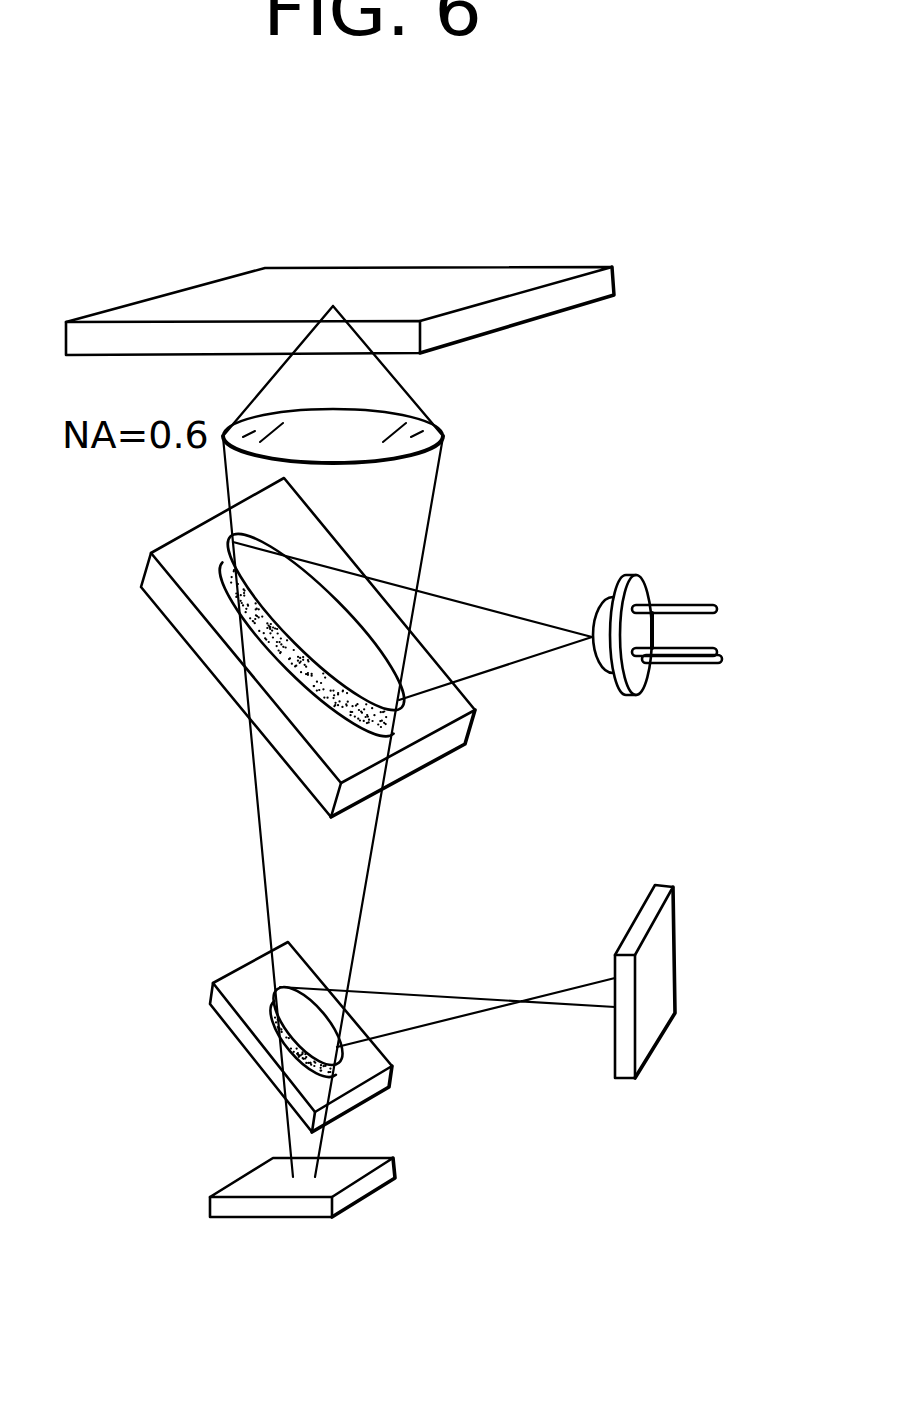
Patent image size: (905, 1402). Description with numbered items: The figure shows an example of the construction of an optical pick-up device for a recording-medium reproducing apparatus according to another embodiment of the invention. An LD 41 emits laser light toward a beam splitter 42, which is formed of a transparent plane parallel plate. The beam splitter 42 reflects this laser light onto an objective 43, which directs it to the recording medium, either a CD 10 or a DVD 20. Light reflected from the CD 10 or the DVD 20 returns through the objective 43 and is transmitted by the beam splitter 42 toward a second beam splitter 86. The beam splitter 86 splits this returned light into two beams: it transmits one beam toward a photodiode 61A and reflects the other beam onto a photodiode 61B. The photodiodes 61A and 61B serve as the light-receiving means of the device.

The CD 10 is at (346, 257).
The DVD 20 is at (485, 267).
The objective 43 is at (387, 410).
The beam splitter 42 is at (207, 668).
The LD 41 is at (630, 695).
The beam splitter 86 is at (247, 1045).
The photodiode 61A is at (283, 1220).
The photodiode 61B is at (628, 1080).